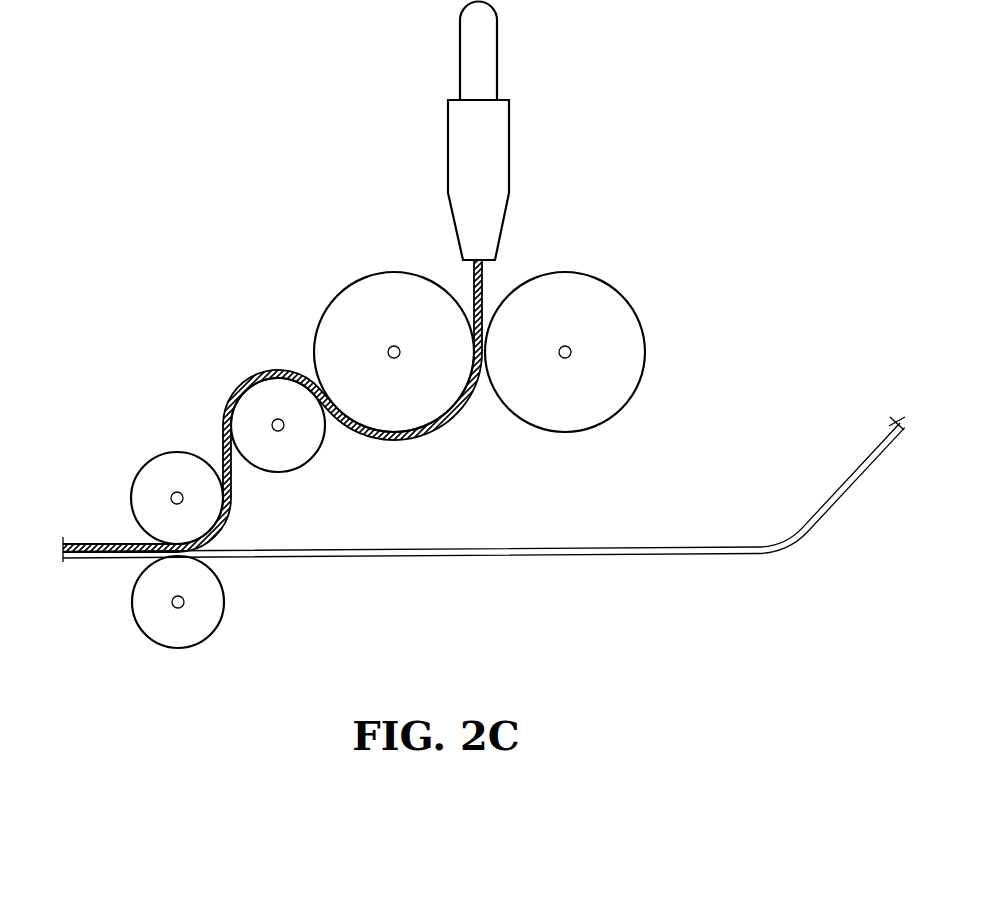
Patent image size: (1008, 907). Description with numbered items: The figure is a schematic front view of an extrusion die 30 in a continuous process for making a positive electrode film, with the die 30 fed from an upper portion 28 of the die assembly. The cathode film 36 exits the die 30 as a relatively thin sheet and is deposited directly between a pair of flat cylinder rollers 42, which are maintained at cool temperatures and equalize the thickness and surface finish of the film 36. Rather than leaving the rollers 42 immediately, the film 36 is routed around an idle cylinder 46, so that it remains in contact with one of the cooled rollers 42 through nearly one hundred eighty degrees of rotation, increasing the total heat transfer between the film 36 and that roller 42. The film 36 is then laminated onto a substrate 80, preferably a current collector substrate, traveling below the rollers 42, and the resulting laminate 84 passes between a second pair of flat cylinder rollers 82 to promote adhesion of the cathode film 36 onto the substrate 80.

The tube 28 is at (487, 35).
The die 30 is at (461, 128).
The cathode film 36 is at (484, 283).
The flat cylinder rollers 42 is at (341, 308).
The idle cylinder 46 is at (254, 402).
The substrate 80 is at (526, 547).
The second pair of flat cylinder rollers 82 is at (140, 498).
The laminate 84 is at (100, 557).